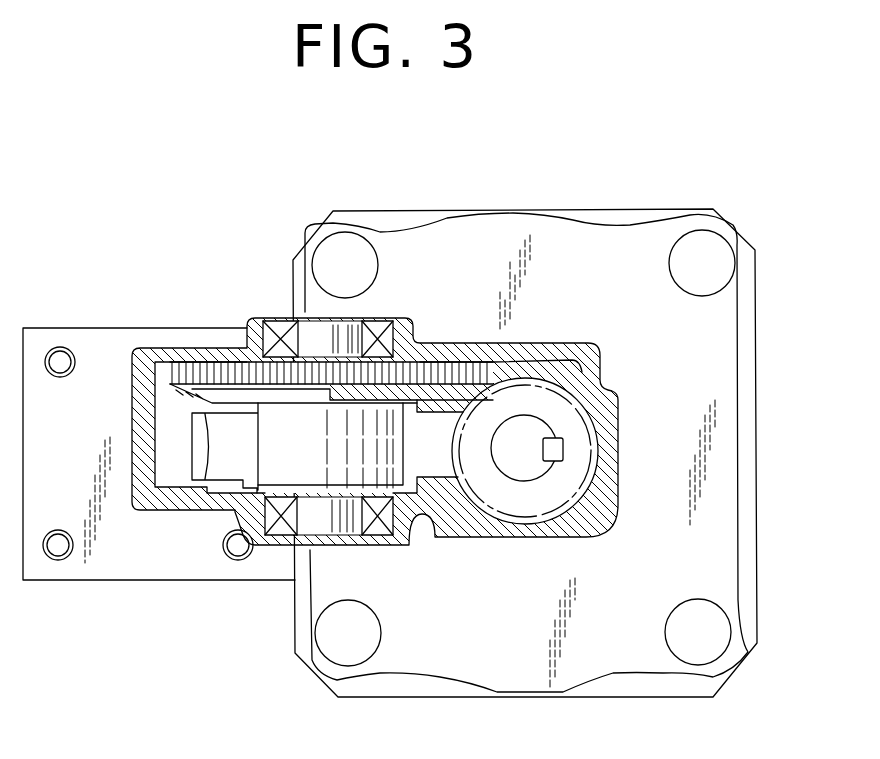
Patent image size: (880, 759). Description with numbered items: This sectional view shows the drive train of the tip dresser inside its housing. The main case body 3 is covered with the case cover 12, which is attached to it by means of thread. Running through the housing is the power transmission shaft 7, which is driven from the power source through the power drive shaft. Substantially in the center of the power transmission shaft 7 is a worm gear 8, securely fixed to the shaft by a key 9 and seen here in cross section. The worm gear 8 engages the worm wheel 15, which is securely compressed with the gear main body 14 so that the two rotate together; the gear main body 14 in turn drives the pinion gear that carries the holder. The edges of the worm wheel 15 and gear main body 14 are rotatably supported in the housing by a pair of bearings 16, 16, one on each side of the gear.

The main case body 3 is at (598, 246).
The power transmission shaft 7 is at (529, 467).
The worm gear 8 is at (580, 417).
The key 9 is at (563, 449).
The case cover 12 is at (135, 348).
The gear main body 14 is at (205, 370).
The worm wheel 15 is at (230, 453).
The bearings 16 is at (280, 330).